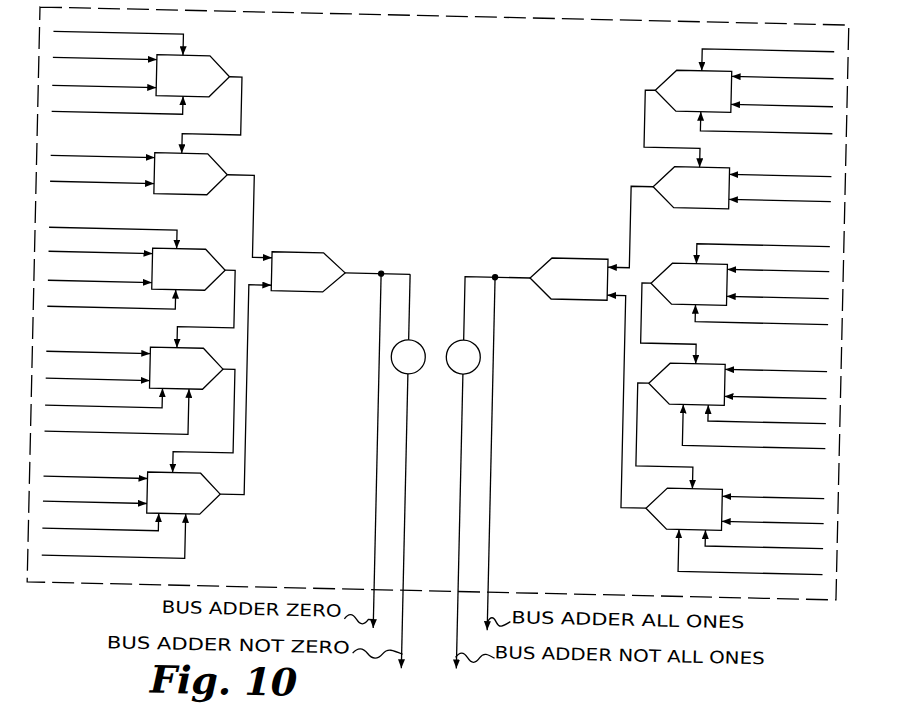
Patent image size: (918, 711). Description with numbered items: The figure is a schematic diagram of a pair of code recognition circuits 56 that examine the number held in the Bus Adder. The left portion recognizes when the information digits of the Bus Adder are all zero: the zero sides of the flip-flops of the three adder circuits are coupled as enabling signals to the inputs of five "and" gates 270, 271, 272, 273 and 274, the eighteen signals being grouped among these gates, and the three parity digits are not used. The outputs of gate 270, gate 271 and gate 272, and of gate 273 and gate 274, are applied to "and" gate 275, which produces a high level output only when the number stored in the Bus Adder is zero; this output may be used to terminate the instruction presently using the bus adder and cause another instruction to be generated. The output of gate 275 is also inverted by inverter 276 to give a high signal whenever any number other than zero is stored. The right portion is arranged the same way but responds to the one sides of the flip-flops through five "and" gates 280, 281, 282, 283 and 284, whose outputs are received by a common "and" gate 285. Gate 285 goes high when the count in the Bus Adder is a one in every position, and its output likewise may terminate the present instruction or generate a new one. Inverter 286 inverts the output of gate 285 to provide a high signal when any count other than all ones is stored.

The code recognition circuit 56 is at (400, 6).
The "and" gate 270 is at (217, 56).
The "and" gate 271 is at (227, 154).
The "and" gate 272 is at (193, 246).
The "and" gate 273 is at (199, 345).
The "and" gate 274 is at (219, 500).
The "and" gate 275 is at (316, 246).
The inverter 276 is at (428, 364).
The "and" gate 280 is at (674, 61).
The "and" gate 281 is at (672, 161).
The "and" gate 282 is at (695, 249).
The "and" gate 283 is at (693, 349).
The "and" gate 284 is at (671, 499).
The common "and" gate 285 is at (554, 247).
The inverter 286 is at (455, 336).